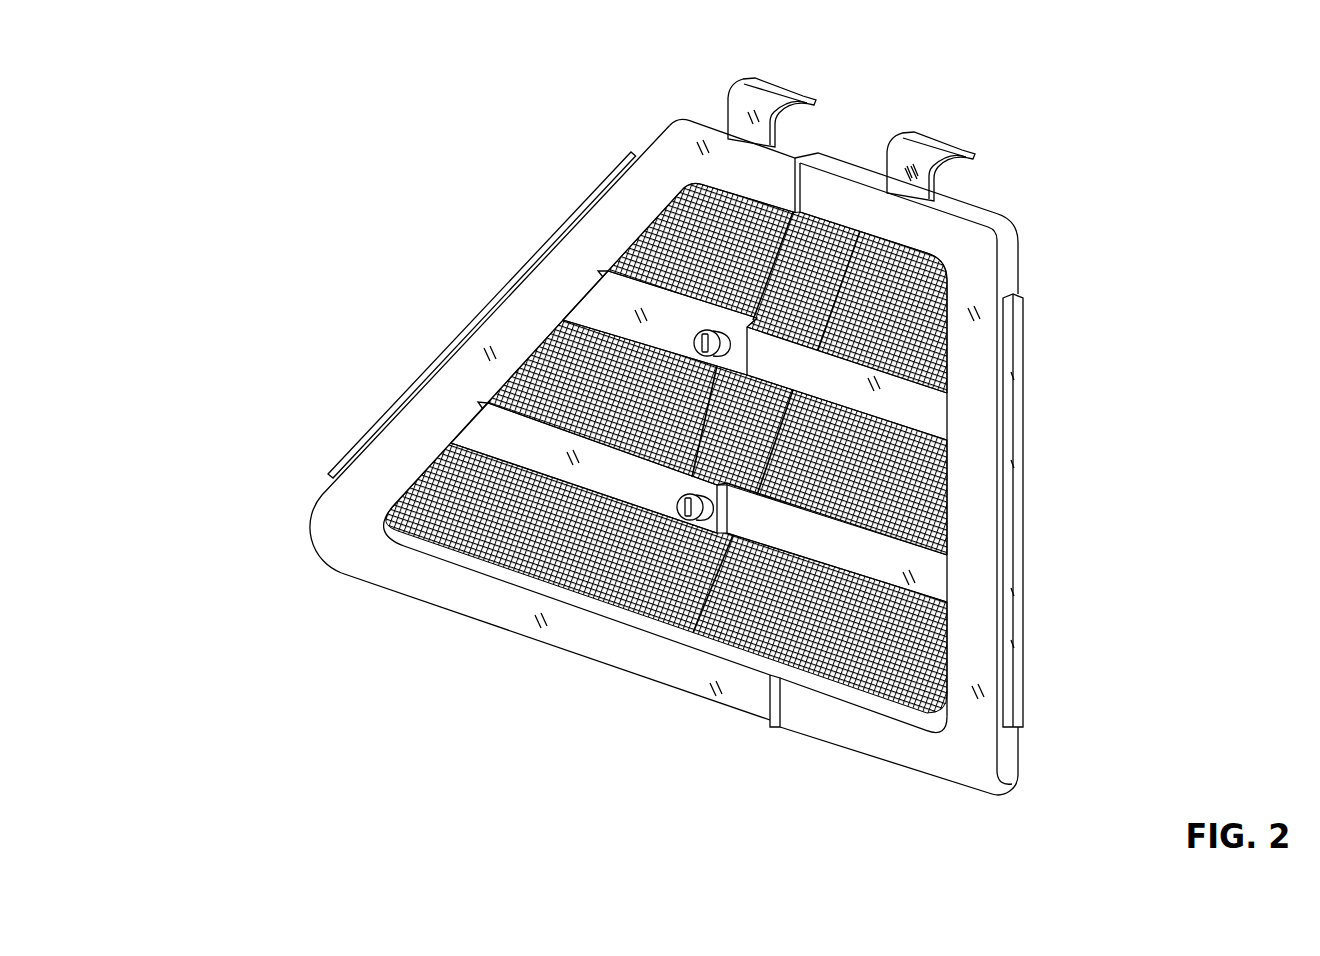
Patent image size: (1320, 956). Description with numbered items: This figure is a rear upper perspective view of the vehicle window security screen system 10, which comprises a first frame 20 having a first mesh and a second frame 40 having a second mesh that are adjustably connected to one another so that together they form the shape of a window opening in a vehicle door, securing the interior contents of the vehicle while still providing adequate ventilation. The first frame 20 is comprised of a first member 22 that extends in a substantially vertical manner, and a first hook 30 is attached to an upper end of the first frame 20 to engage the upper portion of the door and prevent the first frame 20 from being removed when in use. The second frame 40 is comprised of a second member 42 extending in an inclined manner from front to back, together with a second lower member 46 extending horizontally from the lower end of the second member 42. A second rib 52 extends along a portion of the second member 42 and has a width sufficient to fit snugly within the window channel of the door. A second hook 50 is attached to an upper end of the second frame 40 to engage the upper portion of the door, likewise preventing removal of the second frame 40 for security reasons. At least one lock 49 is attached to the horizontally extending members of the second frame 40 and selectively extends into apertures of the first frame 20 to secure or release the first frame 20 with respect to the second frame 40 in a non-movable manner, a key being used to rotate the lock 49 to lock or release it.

The vehicle window security screen system 10 is at (236, 146).
The first frame 20 is at (689, 457).
The first member 22 is at (975, 336).
The first hook 30 is at (950, 135).
The second frame 40 is at (682, 118).
The second member 42 is at (383, 458).
The second lower member 46 is at (500, 612).
The lock 49 is at (670, 520).
The second hook 50 is at (810, 92).
The second rib 52 is at (577, 210).